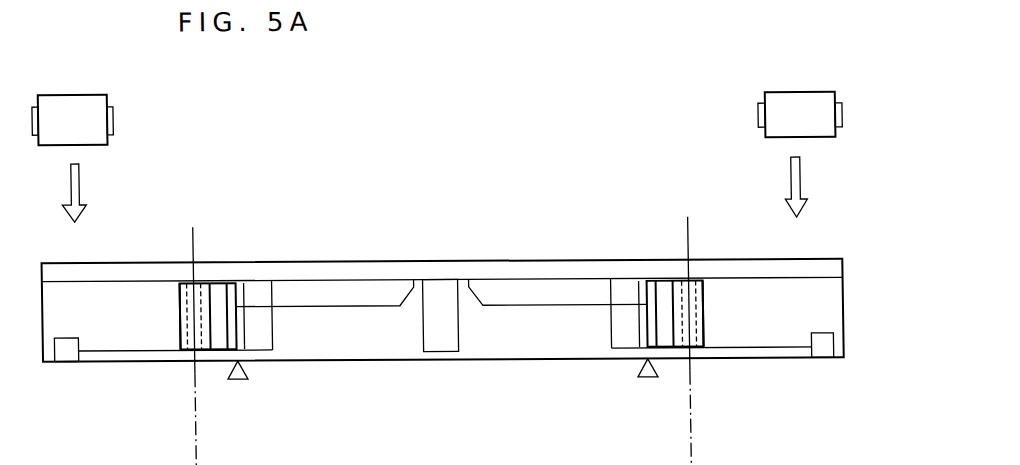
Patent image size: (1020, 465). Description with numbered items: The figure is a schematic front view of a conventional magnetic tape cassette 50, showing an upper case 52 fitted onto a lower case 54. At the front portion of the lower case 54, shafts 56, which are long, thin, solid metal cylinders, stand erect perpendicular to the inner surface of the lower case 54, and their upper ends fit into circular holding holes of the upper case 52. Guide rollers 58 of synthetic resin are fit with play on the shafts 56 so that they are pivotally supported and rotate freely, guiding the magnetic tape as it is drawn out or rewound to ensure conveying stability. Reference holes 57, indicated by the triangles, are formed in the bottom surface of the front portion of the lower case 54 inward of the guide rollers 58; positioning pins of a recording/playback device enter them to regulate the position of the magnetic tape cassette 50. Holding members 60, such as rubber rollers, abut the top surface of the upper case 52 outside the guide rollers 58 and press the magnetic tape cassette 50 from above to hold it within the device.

The magnetic tape cassette 50 is at (542, 254).
The upper case 52 is at (378, 262).
The lower case 54 is at (449, 362).
The shaft 56 is at (203, 282).
The reference hole 57 is at (243, 362).
The guide roller 58 is at (179, 328).
The holding member 60 is at (78, 108).